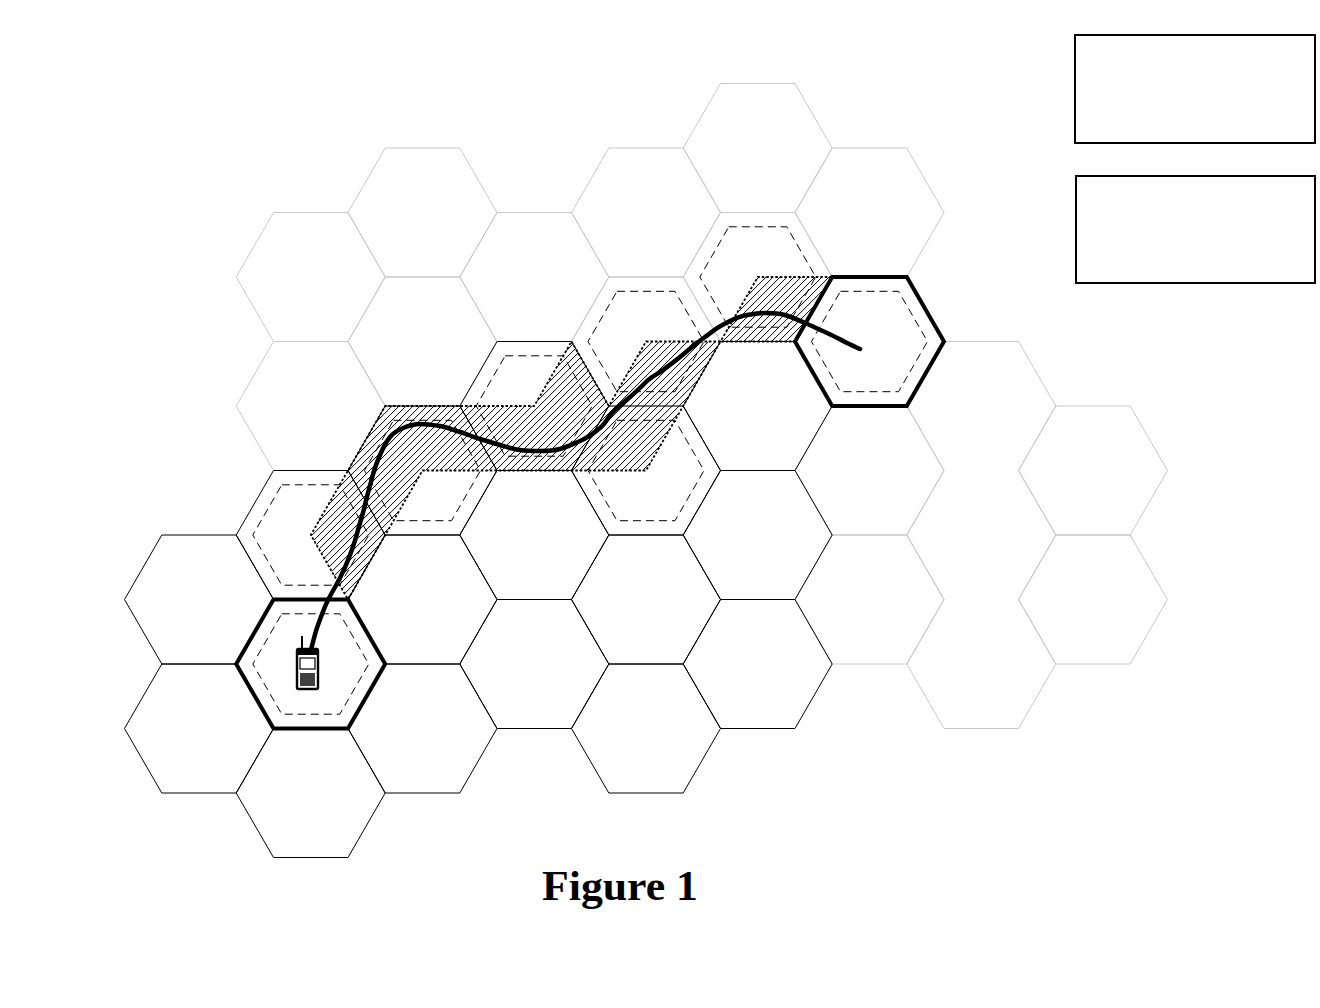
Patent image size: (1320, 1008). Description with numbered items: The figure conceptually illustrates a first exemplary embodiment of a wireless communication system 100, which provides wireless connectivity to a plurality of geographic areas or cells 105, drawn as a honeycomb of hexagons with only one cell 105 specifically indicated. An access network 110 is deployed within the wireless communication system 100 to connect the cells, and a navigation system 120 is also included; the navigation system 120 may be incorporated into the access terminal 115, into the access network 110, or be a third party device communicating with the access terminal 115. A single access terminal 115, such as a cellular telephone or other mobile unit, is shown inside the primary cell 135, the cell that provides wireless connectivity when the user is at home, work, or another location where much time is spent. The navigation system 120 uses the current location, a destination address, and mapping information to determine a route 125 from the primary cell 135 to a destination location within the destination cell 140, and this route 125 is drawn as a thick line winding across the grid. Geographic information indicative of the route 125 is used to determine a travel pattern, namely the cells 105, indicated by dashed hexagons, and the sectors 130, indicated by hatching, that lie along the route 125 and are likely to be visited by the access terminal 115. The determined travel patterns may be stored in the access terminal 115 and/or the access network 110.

The wireless communication system 100 is at (165, 132).
The cell 105 is at (431, 148).
The access network 110 is at (1180, 124).
The access terminal 115 is at (322, 678).
The navigation system 120 is at (1215, 269).
The route 125 is at (377, 428).
The sector 130 is at (325, 508).
The primary cell 135 is at (363, 629).
The destination cell 140 is at (940, 328).